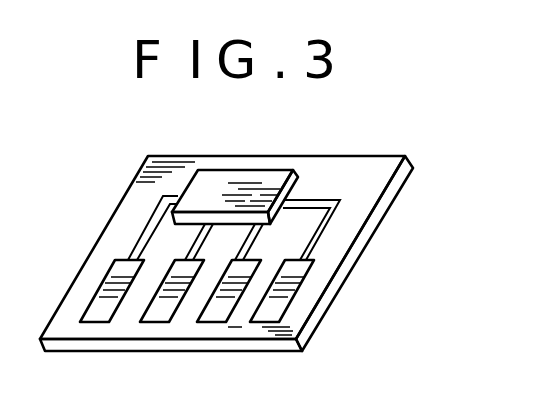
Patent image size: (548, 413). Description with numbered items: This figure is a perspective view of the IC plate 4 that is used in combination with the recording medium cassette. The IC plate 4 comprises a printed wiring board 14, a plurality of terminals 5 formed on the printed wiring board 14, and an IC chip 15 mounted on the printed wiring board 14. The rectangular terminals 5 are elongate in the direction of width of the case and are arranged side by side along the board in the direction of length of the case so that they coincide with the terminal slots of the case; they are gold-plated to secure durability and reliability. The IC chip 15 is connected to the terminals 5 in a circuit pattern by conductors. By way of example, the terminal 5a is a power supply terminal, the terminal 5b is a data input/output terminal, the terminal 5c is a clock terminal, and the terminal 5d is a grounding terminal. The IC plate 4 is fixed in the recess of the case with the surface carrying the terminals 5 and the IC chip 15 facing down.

The IC plate 4 is at (249, 230).
The printed wiring board 14 is at (367, 209).
The IC chip 15 is at (218, 183).
The terminals 5 is at (314, 292).
The power supply terminal 5a is at (98, 318).
The data I/O terminal 5b is at (158, 318).
The clock terminal 5c is at (215, 320).
The grounding terminal 5d is at (268, 318).